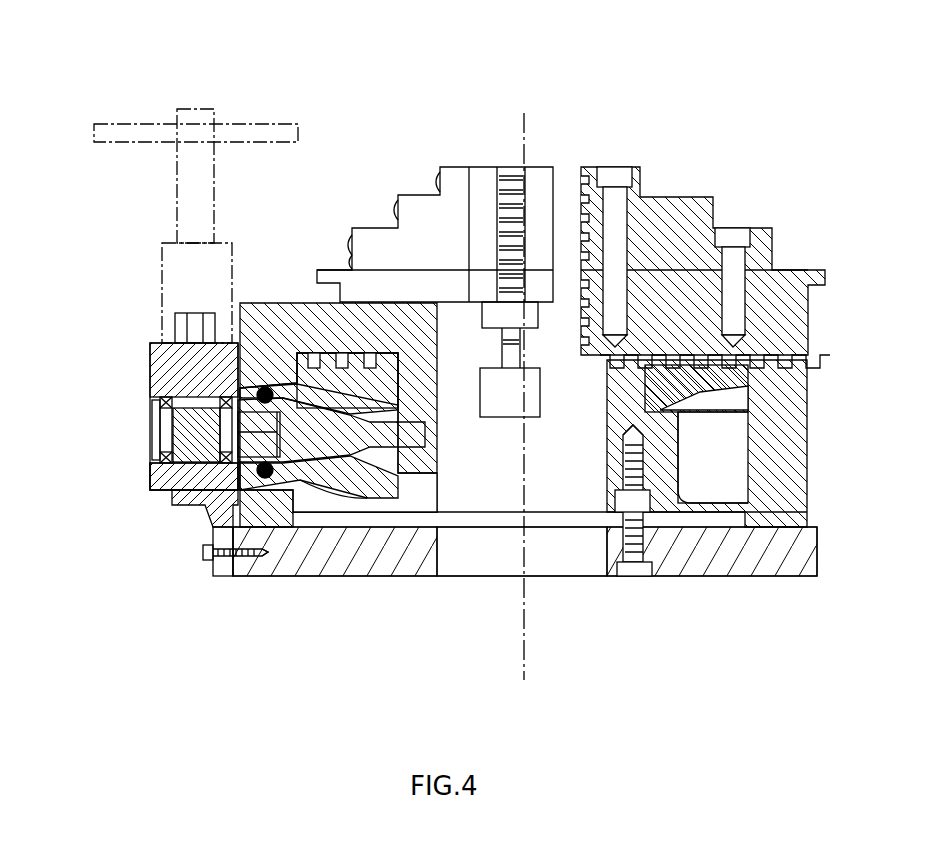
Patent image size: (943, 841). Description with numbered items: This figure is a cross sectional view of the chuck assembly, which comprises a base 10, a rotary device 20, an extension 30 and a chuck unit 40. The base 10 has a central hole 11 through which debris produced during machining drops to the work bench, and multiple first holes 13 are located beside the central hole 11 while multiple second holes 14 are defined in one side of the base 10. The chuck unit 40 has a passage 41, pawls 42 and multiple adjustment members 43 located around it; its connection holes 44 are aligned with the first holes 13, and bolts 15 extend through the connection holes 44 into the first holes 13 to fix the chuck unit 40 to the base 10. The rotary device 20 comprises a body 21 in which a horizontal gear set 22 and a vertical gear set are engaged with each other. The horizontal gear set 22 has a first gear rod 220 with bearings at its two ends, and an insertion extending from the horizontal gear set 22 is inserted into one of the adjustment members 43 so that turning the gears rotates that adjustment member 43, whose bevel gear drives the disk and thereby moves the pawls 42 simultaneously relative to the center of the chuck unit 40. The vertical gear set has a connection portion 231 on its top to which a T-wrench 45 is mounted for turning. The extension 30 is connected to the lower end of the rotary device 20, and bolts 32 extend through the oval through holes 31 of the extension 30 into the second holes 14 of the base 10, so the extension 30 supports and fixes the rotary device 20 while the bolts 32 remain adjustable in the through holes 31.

The base 10 is at (712, 585).
The central hole 11 is at (500, 547).
The first holes 13 is at (635, 578).
The second holes 14 is at (256, 565).
The bolts 15 is at (655, 502).
The rotary device 20 is at (140, 347).
The body 21 is at (153, 393).
The horizontal gear set 22 is at (158, 432).
The first gear rod 220 is at (152, 479).
The connection portion 231 is at (166, 323).
The extension 30 is at (150, 525).
The through holes 31 is at (225, 566).
The bolts 32 is at (200, 560).
The chuck unit 40 is at (422, 185).
The passage 41 is at (565, 345).
The pawls 42 is at (680, 200).
The adjustment members 43 is at (277, 352).
The connection holes 44 is at (630, 437).
The T-wrench 45 is at (158, 118).